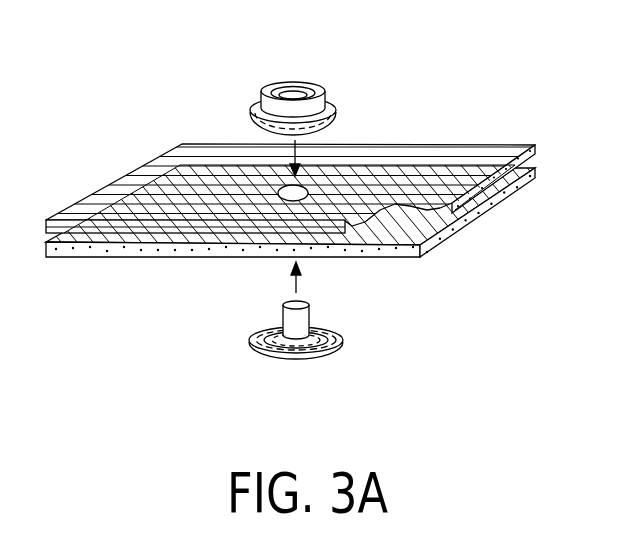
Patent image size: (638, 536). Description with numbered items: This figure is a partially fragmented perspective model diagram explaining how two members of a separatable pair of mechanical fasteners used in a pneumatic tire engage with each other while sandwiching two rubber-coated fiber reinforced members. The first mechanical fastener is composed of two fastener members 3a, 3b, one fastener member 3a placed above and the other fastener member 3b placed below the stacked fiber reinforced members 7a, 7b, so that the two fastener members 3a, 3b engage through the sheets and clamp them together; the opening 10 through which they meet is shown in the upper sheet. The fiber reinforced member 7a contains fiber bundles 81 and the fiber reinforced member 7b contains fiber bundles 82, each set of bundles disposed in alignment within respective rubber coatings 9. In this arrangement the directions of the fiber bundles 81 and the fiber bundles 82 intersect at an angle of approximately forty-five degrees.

The fastener member 3a is at (293, 82).
The fastener member 3b is at (298, 343).
The fiber reinforced member 7a is at (319, 173).
The fiber reinforced member 7b is at (319, 224).
The rubber coating 9 is at (122, 253).
The through hole 10 is at (300, 187).
The fiber bundles 81 is at (482, 160).
The fiber bundles 82 is at (430, 223).